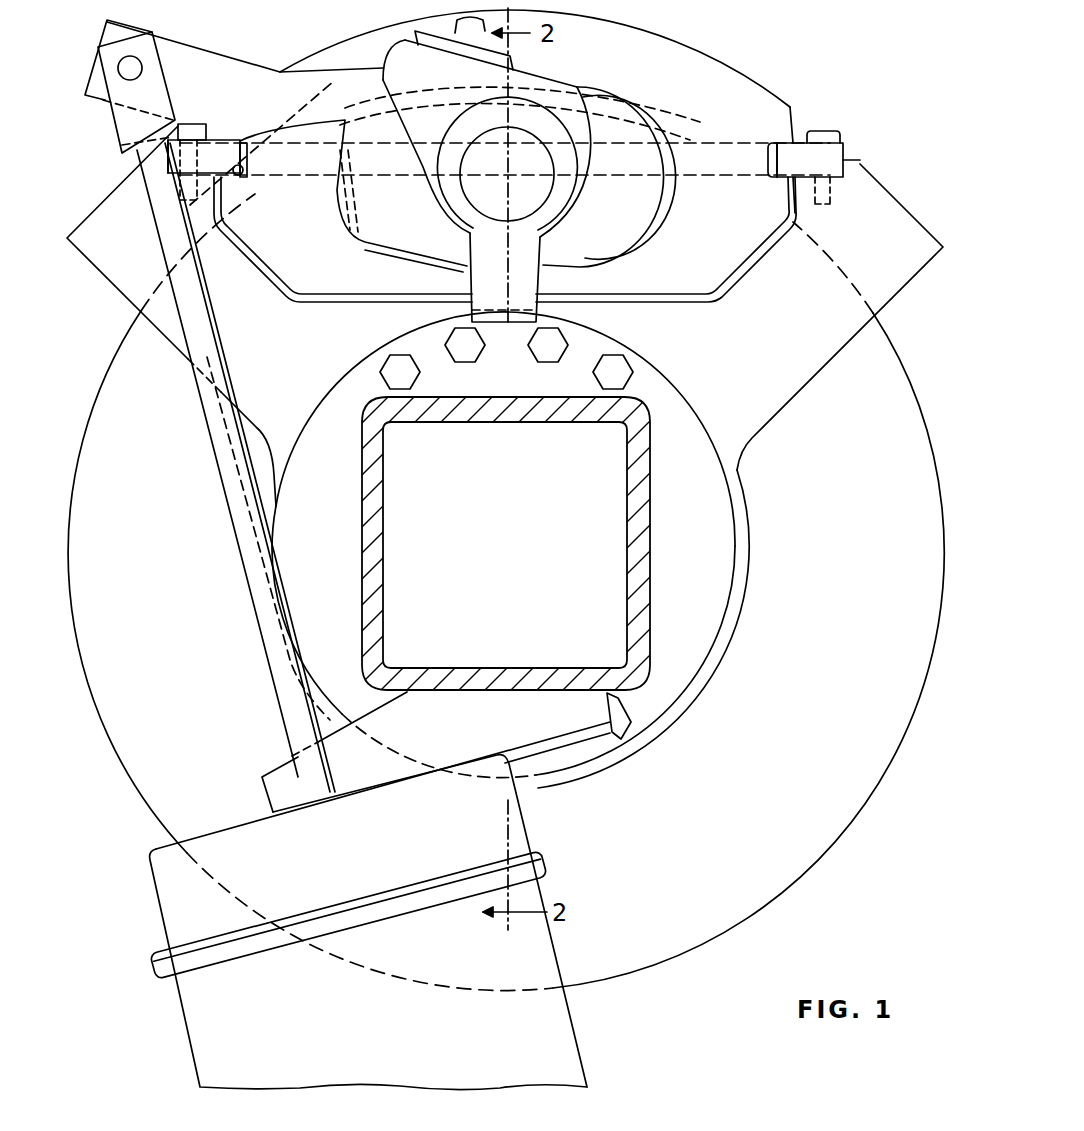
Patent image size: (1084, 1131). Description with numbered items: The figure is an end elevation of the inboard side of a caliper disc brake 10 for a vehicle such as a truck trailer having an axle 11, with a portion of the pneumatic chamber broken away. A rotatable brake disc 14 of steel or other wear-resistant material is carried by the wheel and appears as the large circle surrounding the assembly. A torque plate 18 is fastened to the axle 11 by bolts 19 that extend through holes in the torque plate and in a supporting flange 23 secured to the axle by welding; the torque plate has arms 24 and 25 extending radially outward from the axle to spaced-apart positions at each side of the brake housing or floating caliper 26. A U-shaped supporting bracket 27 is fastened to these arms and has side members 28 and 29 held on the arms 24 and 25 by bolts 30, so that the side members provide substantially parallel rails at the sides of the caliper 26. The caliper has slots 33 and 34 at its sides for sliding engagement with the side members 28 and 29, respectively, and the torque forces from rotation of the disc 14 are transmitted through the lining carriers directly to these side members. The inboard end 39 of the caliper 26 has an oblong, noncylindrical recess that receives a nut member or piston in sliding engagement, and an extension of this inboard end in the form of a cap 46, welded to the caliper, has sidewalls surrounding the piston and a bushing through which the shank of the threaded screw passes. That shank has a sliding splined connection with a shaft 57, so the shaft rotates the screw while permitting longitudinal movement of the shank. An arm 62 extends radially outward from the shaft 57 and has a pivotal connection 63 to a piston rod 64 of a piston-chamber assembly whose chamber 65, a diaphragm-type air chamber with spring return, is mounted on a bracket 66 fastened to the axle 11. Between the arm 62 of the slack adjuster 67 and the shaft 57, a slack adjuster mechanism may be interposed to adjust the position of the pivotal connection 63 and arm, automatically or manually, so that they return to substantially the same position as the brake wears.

The disc brake 10 is at (716, 46).
The axle 11 is at (638, 564).
The brake disc 14 is at (893, 366).
The torque plate 18 is at (740, 488).
The bolts 19 is at (420, 374).
The supporting flange 23 is at (700, 666).
The arm 24 is at (115, 205).
The arm 25 is at (905, 220).
The caliper 26 is at (738, 82).
The supporting bracket 27 is at (170, 160).
The side member 28 is at (222, 152).
The side member 29 is at (812, 170).
The bolts 30 is at (195, 126).
The slot 33 is at (244, 176).
The slot 34 is at (766, 152).
The inboard end 39 is at (728, 266).
The cap 46 is at (603, 103).
The shaft 57 is at (478, 196).
The arm 62 is at (350, 74).
The pivotal connection 63 is at (118, 64).
The piston rod 64 is at (215, 445).
The chamber 65 is at (548, 963).
The bracket 66 is at (275, 778).
The slack adjuster 67 is at (403, 48).